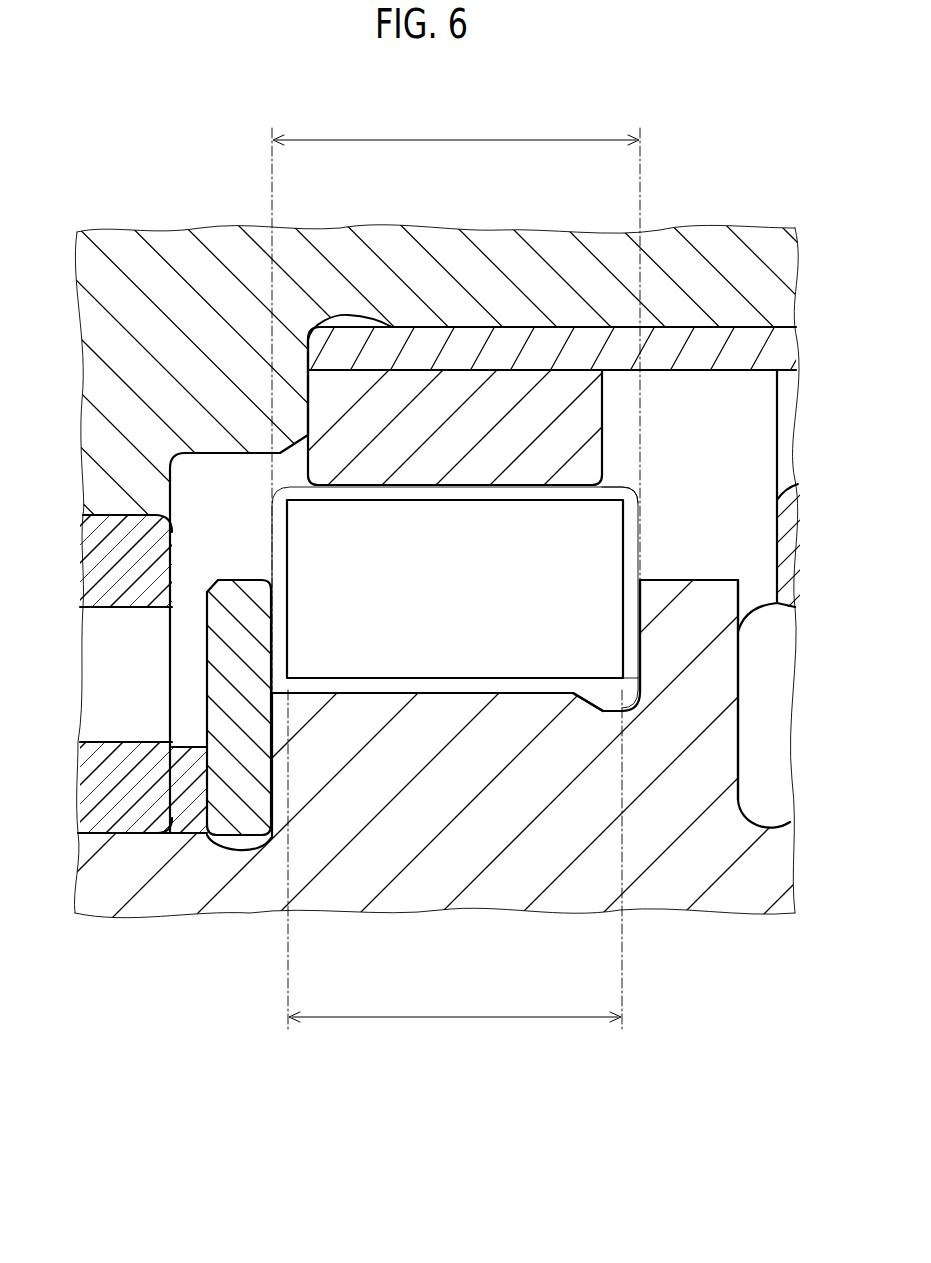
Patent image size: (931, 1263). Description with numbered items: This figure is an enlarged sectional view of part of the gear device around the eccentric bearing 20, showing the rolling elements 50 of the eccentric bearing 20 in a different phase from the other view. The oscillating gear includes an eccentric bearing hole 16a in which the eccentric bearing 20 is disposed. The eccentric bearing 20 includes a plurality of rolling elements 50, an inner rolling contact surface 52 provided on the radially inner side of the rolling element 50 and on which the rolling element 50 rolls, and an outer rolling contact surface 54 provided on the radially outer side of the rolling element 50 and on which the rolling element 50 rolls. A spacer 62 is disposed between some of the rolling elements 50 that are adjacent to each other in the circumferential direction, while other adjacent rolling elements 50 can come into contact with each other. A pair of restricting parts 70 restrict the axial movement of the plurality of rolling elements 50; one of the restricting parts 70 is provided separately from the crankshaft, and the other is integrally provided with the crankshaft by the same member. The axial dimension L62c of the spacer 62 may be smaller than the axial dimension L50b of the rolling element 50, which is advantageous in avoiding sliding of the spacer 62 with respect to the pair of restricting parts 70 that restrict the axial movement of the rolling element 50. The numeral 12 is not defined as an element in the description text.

The lower housing body 12 is at (427, 693).
The eccentric bearing hole 16a is at (372, 487).
The eccentric bearing 20 is at (627, 482).
The rolling element 50 is at (642, 492).
The inner rolling contact surface 52 is at (520, 693).
The outer rolling contact surface 54 is at (503, 487).
The spacer 62 is at (357, 640).
The restricting part 70 is at (238, 578).
The axial dimension of the rolling element L50b is at (456, 138).
The axial dimension of the spacer L62c is at (456, 1019).